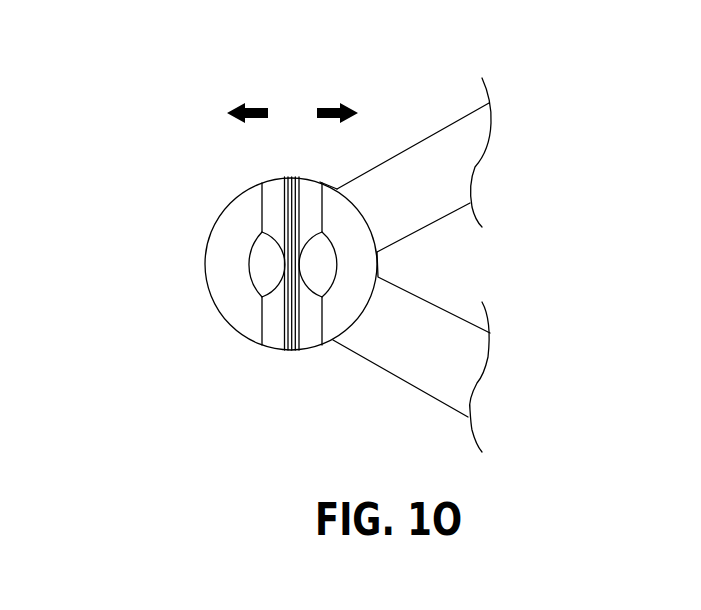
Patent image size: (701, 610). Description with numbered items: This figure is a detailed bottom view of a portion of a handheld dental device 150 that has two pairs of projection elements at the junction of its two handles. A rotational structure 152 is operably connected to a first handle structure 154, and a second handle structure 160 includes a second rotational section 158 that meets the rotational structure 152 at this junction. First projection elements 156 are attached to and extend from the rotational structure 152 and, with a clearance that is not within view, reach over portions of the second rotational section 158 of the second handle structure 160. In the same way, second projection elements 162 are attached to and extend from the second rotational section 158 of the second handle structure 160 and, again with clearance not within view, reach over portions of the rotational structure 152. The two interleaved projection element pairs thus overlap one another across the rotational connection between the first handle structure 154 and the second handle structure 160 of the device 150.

The handheld dental device 150 is at (210, 122).
The rotational structure 152 is at (257, 273).
The first handle structure 154 is at (448, 382).
The first projection elements 156 is at (273, 235).
The second rotational section 158 is at (222, 287).
The second handle structure 160 is at (440, 210).
The second projection elements 162 is at (313, 200).